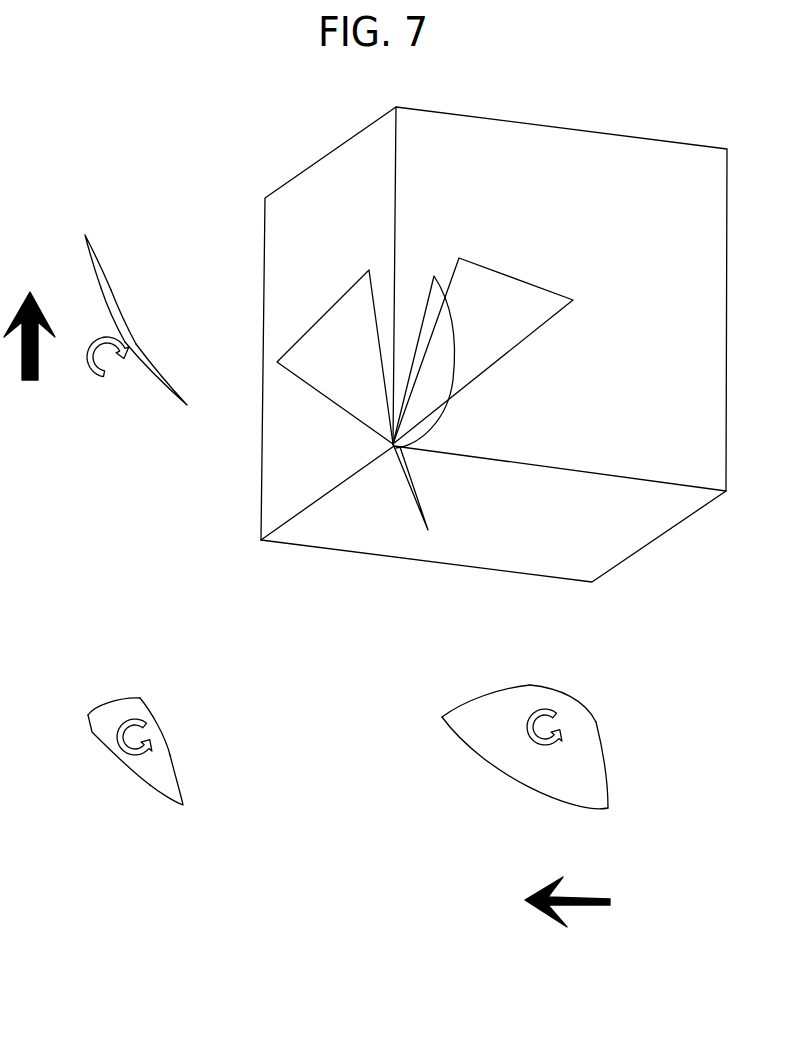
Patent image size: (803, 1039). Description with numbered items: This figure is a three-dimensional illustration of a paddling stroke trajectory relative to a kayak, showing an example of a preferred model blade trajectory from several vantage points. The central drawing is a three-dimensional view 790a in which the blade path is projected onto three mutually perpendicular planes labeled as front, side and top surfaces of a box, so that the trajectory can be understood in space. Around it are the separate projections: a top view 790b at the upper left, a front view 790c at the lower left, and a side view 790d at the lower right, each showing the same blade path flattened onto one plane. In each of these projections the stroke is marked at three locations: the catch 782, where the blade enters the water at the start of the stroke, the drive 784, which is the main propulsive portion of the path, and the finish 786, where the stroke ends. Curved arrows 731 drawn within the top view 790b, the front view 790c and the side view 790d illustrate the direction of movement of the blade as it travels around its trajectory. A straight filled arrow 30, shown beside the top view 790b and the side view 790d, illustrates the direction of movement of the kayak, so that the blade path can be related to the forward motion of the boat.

The three-dimensional view 790a is at (562, 98).
The top view 790b is at (193, 221).
The front view 790c is at (184, 670).
The side view 790d is at (625, 755).
The catch 782 is at (286, 450).
The drive 784 is at (343, 544).
The finish 786 is at (385, 594).
The curved arrows 731 is at (88, 357).
The arrow 30 is at (66, 298).